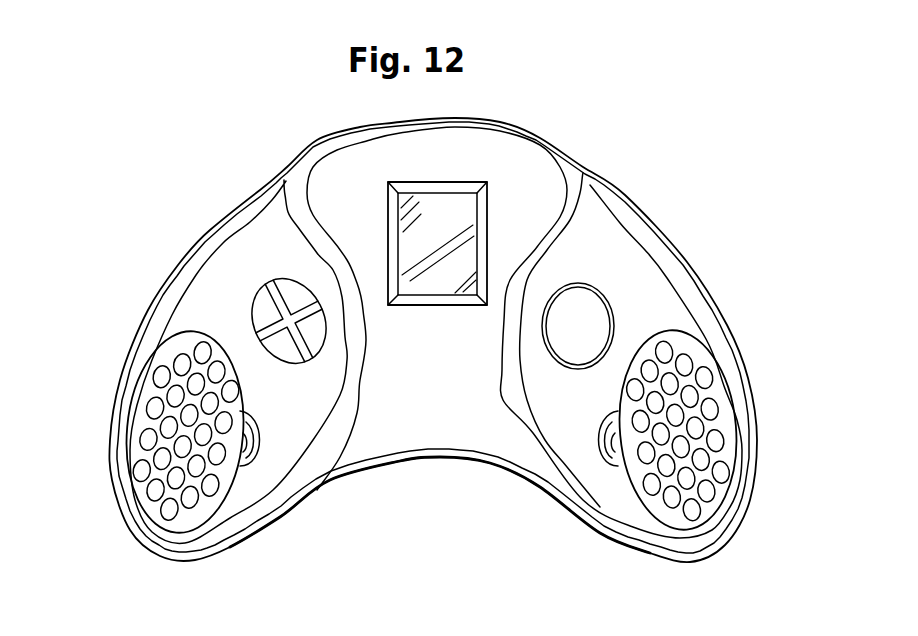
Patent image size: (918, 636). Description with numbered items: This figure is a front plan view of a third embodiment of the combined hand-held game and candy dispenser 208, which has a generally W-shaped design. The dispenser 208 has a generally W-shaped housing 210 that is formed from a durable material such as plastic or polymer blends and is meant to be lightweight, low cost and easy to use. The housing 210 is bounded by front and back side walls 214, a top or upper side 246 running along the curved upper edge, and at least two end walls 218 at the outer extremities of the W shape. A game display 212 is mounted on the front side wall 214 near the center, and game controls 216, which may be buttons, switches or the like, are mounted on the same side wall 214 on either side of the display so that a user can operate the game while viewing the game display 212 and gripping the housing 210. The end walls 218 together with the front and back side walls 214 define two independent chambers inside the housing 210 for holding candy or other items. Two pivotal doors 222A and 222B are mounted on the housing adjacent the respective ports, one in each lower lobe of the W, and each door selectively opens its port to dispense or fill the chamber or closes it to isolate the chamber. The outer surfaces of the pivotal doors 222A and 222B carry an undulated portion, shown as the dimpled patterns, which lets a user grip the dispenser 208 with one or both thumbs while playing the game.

The game and candy dispenser 208 is at (193, 223).
The housing 210 is at (430, 458).
The game display 212 is at (430, 210).
The front and back side walls 214 is at (610, 243).
The game controls 216 is at (263, 313).
The end walls 218 is at (118, 426).
The pivotal door 222A is at (142, 489).
The pivotal door 222B is at (725, 425).
The top or upper side 246 is at (540, 137).